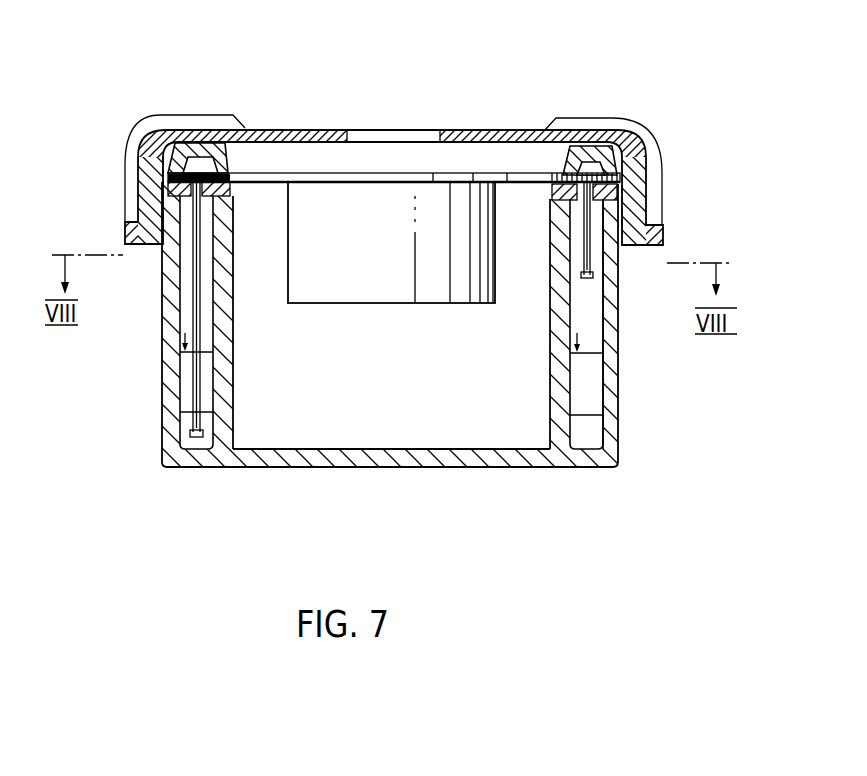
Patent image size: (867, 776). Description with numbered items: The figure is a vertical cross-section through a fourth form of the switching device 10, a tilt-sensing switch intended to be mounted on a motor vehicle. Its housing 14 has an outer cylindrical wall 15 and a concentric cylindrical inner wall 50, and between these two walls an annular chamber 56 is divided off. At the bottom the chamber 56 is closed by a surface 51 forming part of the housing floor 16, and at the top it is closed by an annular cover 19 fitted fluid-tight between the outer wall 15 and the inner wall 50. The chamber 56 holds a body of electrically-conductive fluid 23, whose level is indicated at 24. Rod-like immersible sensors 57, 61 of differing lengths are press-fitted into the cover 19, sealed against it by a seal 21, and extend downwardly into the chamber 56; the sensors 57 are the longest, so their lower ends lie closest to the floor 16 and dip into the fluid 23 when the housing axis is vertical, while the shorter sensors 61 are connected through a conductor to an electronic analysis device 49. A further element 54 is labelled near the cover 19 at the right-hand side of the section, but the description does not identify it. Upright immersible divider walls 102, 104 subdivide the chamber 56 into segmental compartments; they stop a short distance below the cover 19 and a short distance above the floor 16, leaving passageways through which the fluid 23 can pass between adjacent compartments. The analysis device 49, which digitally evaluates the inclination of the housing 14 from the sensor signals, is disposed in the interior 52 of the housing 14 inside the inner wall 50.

The switching device 10 is at (672, 89).
The housing 14 is at (155, 407).
The outer cylindrical wall 15 is at (608, 345).
The housing floor 16 is at (572, 464).
The annular cover 19 is at (606, 186).
The seal 21 is at (628, 172).
The electrically-conductive fluid 23 is at (591, 432).
The fluid level 24 is at (589, 357).
The electronic analysis device 49 is at (403, 266).
The inner cylindrical wall 50 is at (560, 400).
The surface 51 is at (591, 456).
The interior 52 is at (428, 407).
The seal ring 54 is at (608, 217).
The annular chamber 56 is at (598, 258).
The immersible sensor 57 is at (198, 331).
The immersible sensor 61 is at (588, 253).
The immersible divider wall 102 is at (205, 260).
The immersible divider wall 104 is at (583, 303).